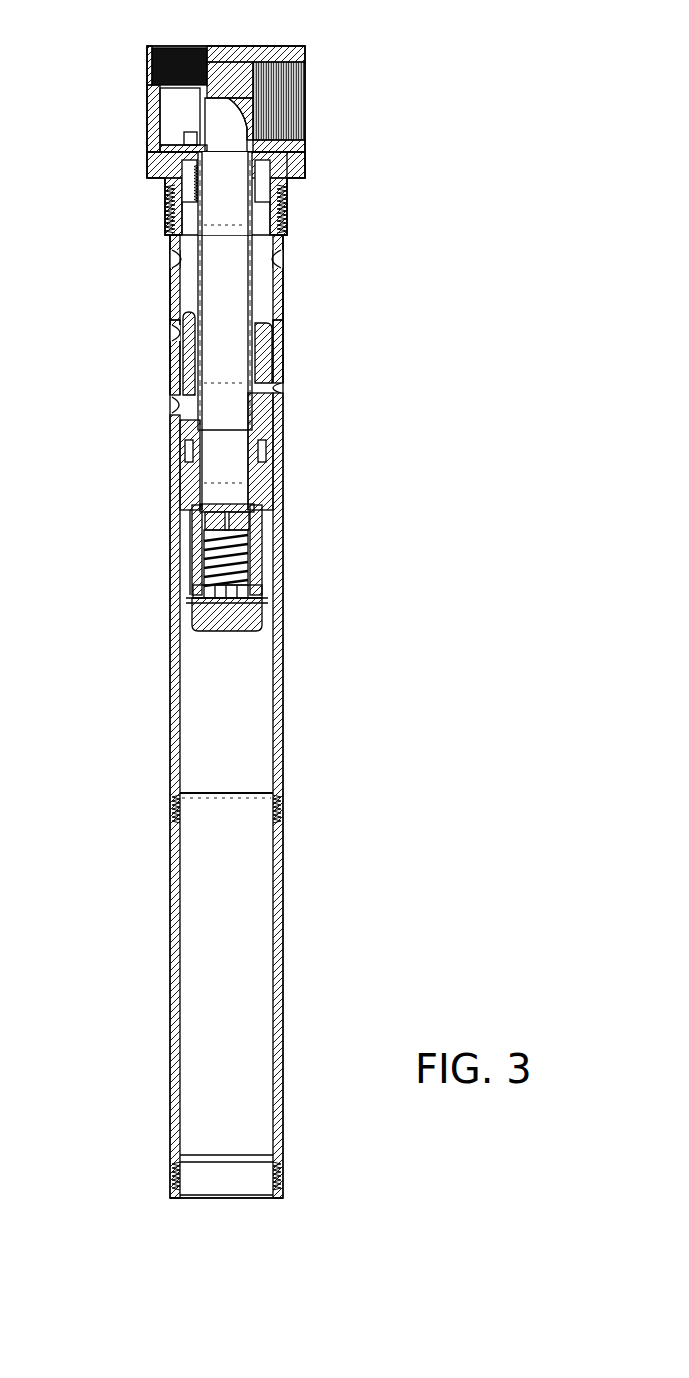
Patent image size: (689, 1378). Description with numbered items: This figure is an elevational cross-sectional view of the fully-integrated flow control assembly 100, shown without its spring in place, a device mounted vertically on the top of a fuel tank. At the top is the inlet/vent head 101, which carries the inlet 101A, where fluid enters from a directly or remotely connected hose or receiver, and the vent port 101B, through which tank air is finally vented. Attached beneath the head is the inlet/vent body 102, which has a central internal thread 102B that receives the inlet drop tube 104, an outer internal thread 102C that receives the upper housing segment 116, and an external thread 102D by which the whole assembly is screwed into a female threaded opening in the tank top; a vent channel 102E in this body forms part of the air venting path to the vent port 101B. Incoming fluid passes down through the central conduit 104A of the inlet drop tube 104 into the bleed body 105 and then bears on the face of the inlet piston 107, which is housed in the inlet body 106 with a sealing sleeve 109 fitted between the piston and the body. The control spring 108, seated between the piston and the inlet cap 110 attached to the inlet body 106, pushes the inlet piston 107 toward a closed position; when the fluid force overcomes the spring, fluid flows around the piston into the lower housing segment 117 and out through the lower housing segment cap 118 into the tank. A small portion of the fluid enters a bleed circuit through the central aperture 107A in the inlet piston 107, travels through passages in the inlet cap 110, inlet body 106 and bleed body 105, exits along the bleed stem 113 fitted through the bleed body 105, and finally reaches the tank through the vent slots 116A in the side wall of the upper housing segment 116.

The fully-integrated flow control assembly 100 is at (350, 54).
The inlet/vent head 101 is at (140, 118).
The inlet 101A is at (316, 100).
The vent port 101B is at (170, 42).
The inlet/vent body 102 is at (148, 170).
The central internal thread 102B is at (188, 188).
The outer internal thread 102C is at (296, 210).
The external thread 102D is at (160, 216).
The vent channel 102E is at (292, 158).
The inlet drop tube 104 is at (254, 300).
The central conduit 104A is at (242, 262).
The bleed body 105 is at (180, 468).
The inlet body 106 is at (276, 506).
The inlet piston 107 is at (203, 526).
The central aperture 107A is at (246, 522).
The control spring 108 is at (206, 574).
The sealing sleeve 109 is at (256, 573).
The inlet cap 110 is at (258, 623).
The bleed stem 113 is at (172, 360).
The upper housing segment 116 is at (172, 296).
The vent slots 116A is at (165, 263).
The lower housing segment 117 is at (172, 738).
The lower housing segment cap 118 is at (171, 1192).